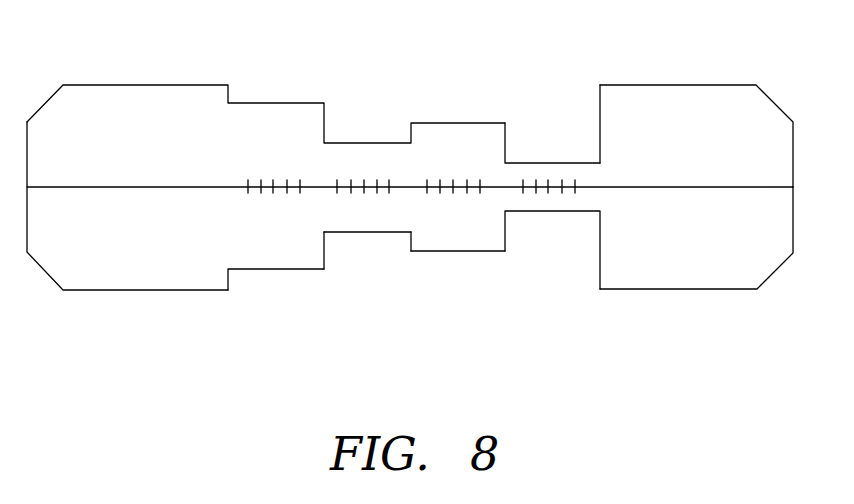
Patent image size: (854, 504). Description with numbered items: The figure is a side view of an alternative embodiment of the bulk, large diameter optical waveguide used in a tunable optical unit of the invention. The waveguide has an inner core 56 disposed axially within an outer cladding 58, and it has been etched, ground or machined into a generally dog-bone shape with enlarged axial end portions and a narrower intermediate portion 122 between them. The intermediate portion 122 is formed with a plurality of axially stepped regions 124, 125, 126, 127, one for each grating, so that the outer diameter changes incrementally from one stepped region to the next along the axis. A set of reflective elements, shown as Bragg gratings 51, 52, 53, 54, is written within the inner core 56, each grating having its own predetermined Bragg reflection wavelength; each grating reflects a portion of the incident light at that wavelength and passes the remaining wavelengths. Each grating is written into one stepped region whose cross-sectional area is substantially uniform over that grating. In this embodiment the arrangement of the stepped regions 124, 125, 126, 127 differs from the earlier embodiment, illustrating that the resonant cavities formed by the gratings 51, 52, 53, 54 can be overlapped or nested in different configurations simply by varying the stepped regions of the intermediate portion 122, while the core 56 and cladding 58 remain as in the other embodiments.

The grating 51 is at (262, 187).
The grating 52 is at (453, 187).
The grating 53 is at (363, 187).
The grating 54 is at (535, 188).
The inner core 56 is at (755, 185).
The outer cladding 58 is at (728, 255).
The intermediate portion 122 is at (427, 250).
The stepped region 124 is at (263, 260).
The stepped region 125 is at (493, 135).
The stepped region 126 is at (365, 222).
The stepped region 127 is at (588, 170).